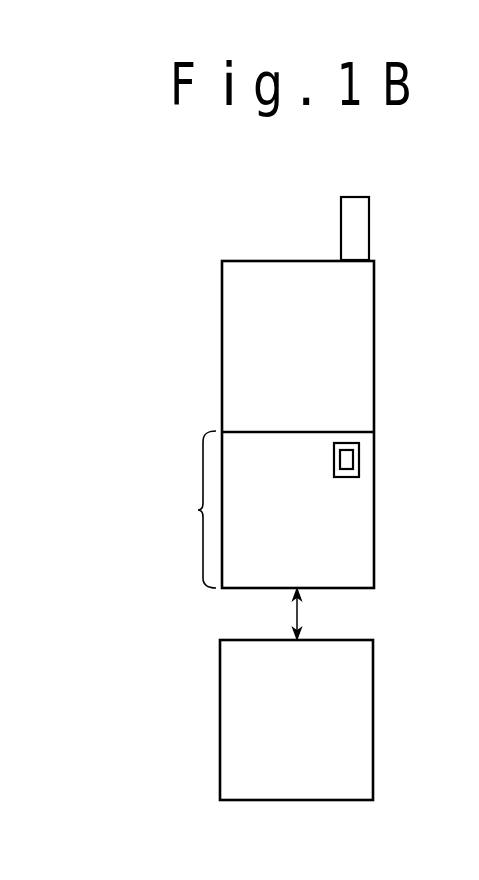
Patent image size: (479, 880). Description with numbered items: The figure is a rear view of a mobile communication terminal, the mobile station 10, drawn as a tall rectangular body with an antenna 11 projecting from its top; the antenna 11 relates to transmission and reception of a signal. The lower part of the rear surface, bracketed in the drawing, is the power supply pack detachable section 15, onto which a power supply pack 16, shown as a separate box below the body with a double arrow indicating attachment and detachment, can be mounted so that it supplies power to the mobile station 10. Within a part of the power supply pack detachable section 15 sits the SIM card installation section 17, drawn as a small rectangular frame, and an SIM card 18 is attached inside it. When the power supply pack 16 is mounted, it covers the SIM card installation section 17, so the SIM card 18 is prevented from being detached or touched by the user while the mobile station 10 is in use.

The mobile station 10 is at (375, 310).
The antenna 11 is at (356, 207).
The power supply pack detachable section 15 is at (193, 509).
The power supply pack 16 is at (233, 686).
The SIM card installation section 17 is at (359, 447).
The SIM card 18 is at (350, 462).